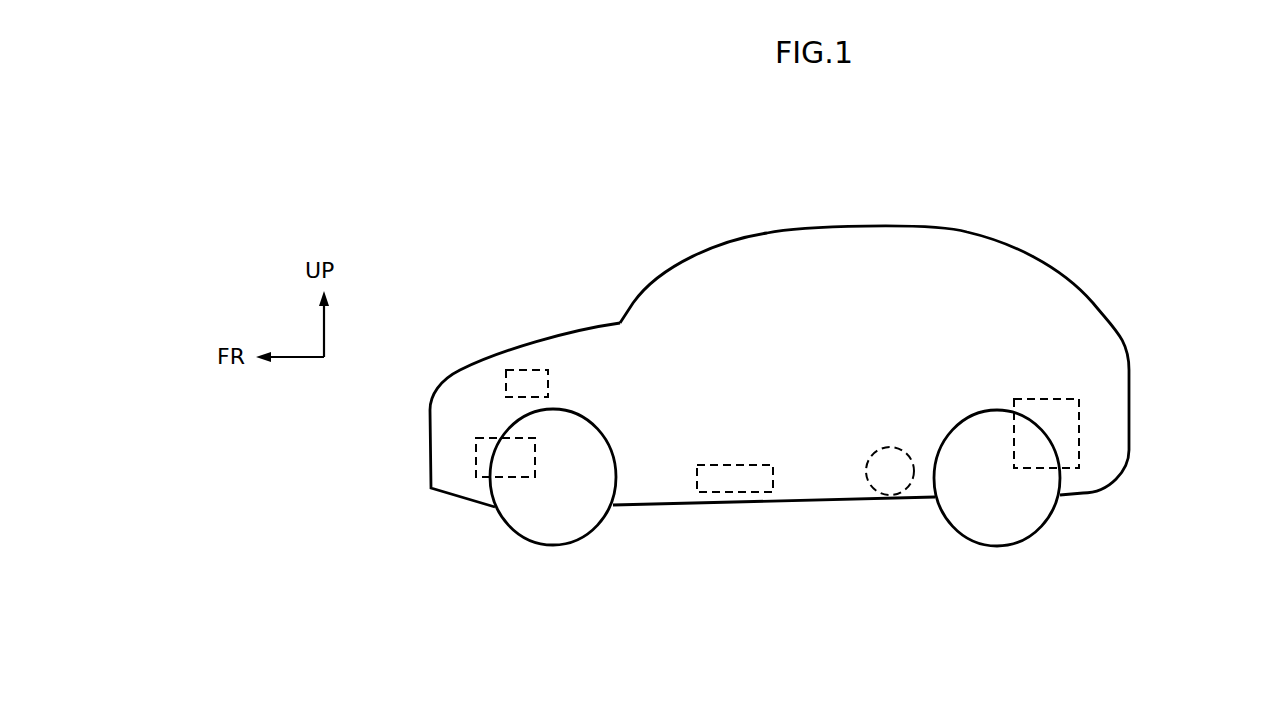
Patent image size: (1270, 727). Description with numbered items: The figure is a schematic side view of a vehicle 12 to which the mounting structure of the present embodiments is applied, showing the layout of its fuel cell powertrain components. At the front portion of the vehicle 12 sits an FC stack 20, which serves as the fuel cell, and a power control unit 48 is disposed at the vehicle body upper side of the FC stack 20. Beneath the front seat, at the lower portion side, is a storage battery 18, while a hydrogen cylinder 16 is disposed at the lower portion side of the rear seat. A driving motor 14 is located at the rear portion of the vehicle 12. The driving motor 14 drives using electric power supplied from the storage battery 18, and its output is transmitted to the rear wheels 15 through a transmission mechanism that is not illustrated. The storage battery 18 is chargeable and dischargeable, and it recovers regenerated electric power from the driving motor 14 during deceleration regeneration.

The vehicle 12 is at (968, 220).
The driving motor 14 is at (1079, 424).
The rear wheels 15 is at (1037, 530).
The hydrogen cylinder 16 is at (867, 473).
The storage battery 18 is at (727, 492).
The FC stack 20 is at (512, 477).
The power control unit 48 is at (528, 370).